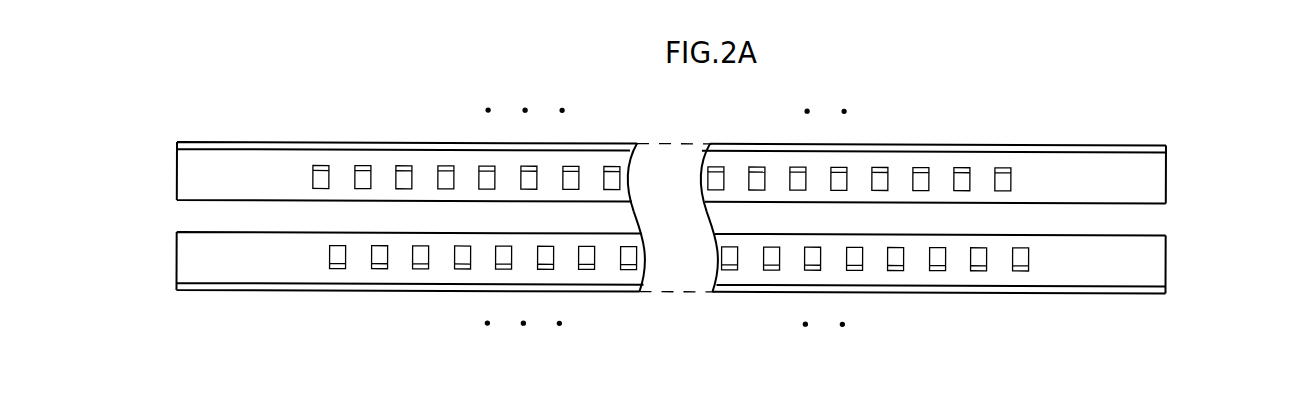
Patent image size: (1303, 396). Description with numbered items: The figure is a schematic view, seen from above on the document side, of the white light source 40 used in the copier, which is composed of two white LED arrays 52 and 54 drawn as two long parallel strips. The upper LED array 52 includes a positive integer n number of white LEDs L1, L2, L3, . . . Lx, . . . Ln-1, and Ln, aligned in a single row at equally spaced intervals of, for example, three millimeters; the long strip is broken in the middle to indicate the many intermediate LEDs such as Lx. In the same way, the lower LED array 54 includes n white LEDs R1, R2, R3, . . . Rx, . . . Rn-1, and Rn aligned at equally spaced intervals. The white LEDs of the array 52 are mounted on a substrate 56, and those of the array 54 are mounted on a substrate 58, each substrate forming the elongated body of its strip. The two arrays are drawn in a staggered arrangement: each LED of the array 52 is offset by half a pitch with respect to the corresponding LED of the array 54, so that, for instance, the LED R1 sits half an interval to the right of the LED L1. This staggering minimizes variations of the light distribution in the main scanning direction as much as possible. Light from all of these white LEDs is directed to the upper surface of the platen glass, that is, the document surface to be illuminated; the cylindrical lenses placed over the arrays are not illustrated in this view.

The white light source 40 is at (1237, 154).
The LED array 52 is at (1168, 175).
The LED array 54 is at (1168, 264).
The substrate 56 is at (177, 183).
The substrate 58 is at (177, 265).
The white LED L1 is at (320, 165).
The white LED L2 is at (362, 165).
The white LED L3 is at (403, 165).
The white LED Lx is at (715, 165).
The white LED Ln-1 is at (961, 165).
The white LED Ln is at (1003, 165).
The white LED R1 is at (338, 268).
The white LED R2 is at (380, 268).
The white LED R3 is at (421, 268).
The white LED Rx is at (730, 268).
The white LED Rn-1 is at (979, 268).
The white LED Rn is at (1021, 268).